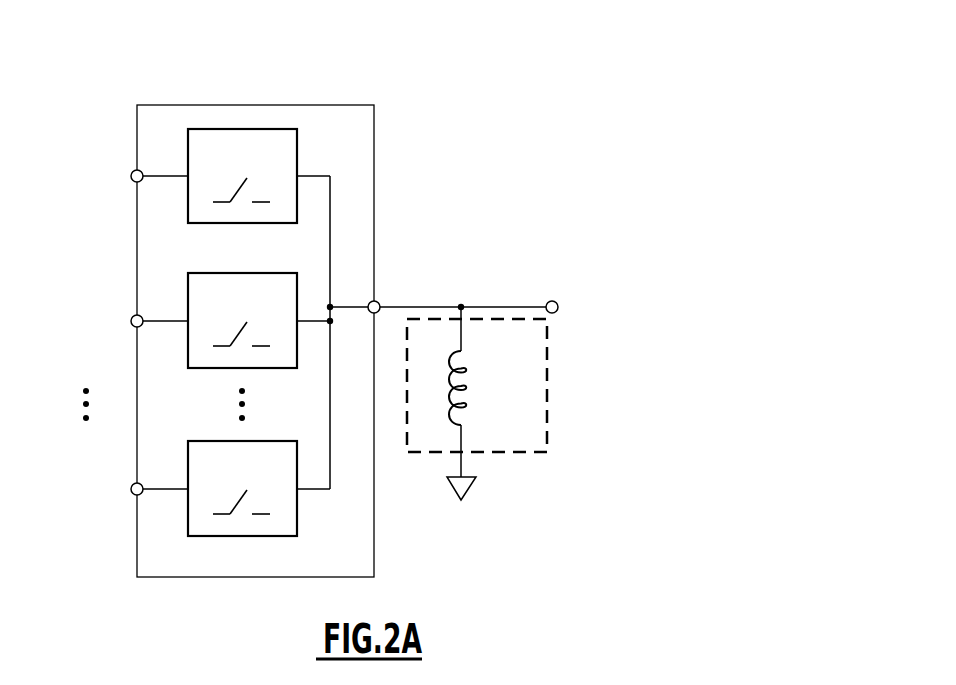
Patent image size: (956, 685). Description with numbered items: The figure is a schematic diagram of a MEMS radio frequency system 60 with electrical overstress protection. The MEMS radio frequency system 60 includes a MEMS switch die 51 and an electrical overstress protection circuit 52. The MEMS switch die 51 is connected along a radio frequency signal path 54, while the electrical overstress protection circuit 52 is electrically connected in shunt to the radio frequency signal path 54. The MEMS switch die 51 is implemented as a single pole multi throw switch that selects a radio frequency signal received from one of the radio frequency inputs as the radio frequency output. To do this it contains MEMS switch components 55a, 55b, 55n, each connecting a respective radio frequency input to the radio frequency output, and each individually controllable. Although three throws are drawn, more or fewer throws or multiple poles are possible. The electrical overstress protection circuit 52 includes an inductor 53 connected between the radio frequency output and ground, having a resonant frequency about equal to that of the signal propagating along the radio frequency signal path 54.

The MEMS radio frequency system 60 is at (374, 291).
The MEMS switch die 51 is at (374, 152).
The MEMS switch component 55a is at (297, 137).
The MEMS switch component 55b is at (265, 273).
The MEMS switch component 55n is at (266, 441).
The radio frequency signal path 54 is at (430, 307).
The inductor 53 is at (468, 372).
The electrical overstress protection circuit 52 is at (547, 410).